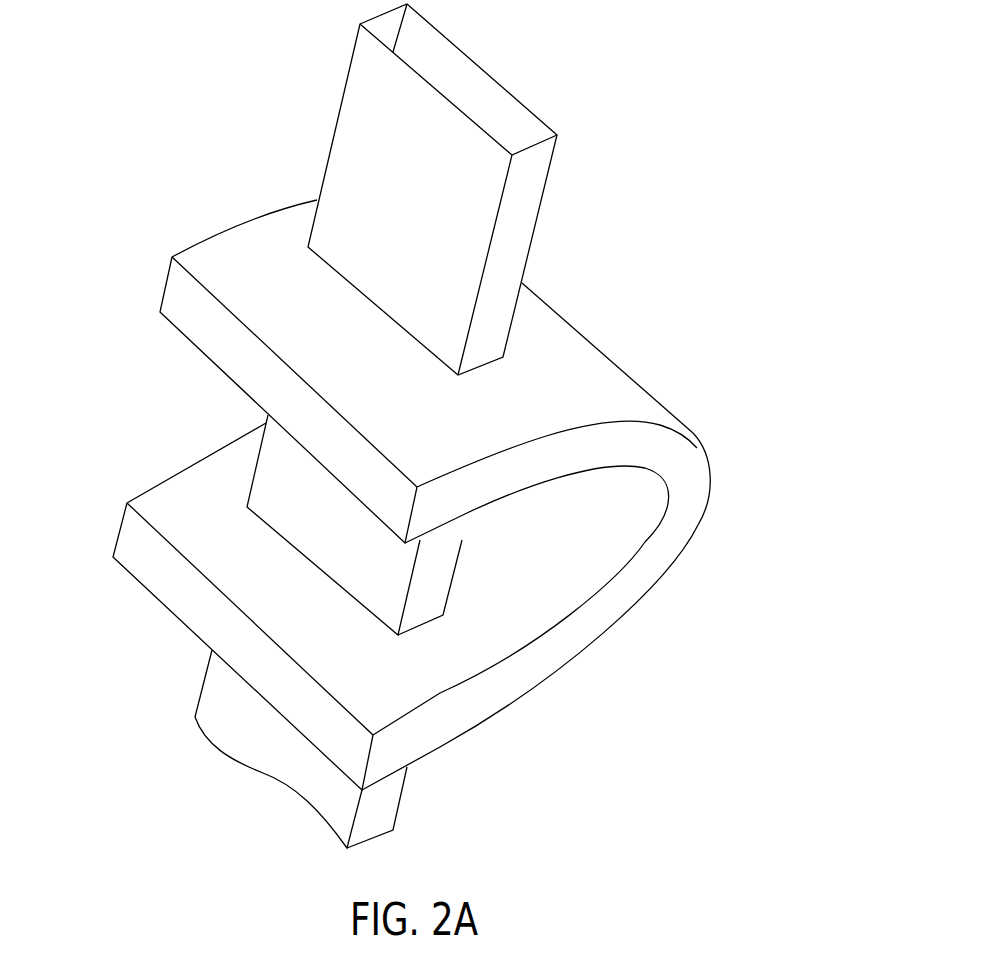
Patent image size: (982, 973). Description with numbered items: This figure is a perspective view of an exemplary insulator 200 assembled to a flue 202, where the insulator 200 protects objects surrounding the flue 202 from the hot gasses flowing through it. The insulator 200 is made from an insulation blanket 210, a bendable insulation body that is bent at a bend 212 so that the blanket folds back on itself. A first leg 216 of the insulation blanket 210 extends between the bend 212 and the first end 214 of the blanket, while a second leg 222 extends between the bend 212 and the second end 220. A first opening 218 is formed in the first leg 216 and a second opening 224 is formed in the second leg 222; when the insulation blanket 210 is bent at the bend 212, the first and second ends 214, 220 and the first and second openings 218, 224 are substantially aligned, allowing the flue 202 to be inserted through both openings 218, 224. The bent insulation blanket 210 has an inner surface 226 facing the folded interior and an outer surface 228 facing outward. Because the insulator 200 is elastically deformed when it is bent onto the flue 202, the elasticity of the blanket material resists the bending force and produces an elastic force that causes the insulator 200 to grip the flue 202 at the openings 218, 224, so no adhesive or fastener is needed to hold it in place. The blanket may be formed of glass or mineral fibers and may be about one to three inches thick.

The insulator 200 is at (706, 233).
The flue 202 is at (343, 128).
The insulation blanket 210 is at (582, 358).
The bend 212 is at (698, 479).
The first end 214 is at (193, 327).
The first leg 216 is at (208, 257).
The first opening 218 is at (477, 365).
The second end 220 is at (168, 592).
The second leg 222 is at (178, 509).
The second opening 224 is at (418, 622).
The inner surface 226 is at (378, 718).
The outer surface 228 is at (425, 463).